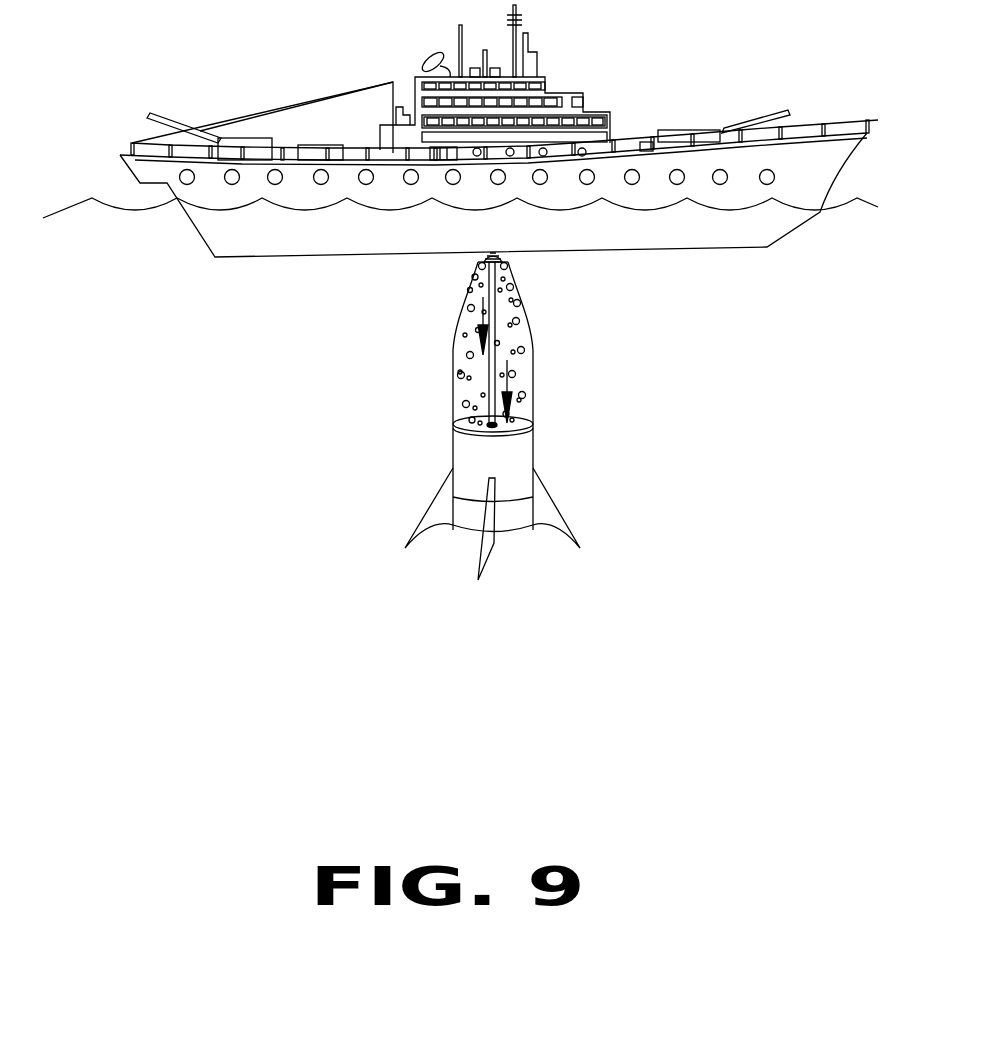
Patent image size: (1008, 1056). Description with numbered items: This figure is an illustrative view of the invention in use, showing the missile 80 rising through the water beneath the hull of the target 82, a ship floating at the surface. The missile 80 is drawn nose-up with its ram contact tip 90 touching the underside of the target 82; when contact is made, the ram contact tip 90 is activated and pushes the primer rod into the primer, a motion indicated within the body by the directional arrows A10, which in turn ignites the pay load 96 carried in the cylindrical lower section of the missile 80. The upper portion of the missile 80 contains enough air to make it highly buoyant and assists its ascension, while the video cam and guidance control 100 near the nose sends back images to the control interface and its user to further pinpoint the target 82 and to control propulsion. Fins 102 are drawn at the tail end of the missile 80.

The missile 80 is at (557, 432).
The target 82 is at (648, 165).
The ram contact tip 90 is at (502, 257).
The pay load 96 is at (525, 457).
The video cam and guidance control 100 is at (479, 267).
The fins 102 is at (470, 518).
The directional arrows A10 is at (483, 318).